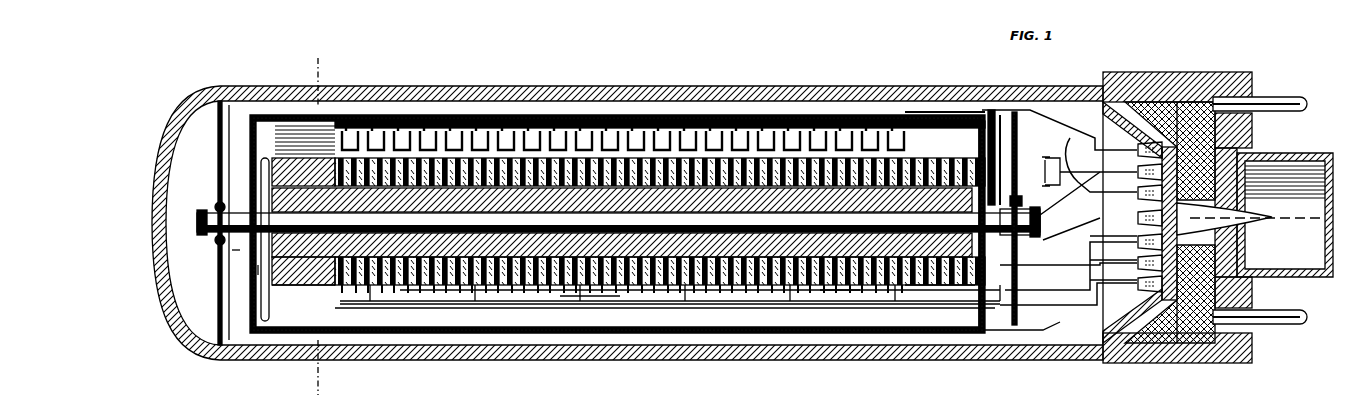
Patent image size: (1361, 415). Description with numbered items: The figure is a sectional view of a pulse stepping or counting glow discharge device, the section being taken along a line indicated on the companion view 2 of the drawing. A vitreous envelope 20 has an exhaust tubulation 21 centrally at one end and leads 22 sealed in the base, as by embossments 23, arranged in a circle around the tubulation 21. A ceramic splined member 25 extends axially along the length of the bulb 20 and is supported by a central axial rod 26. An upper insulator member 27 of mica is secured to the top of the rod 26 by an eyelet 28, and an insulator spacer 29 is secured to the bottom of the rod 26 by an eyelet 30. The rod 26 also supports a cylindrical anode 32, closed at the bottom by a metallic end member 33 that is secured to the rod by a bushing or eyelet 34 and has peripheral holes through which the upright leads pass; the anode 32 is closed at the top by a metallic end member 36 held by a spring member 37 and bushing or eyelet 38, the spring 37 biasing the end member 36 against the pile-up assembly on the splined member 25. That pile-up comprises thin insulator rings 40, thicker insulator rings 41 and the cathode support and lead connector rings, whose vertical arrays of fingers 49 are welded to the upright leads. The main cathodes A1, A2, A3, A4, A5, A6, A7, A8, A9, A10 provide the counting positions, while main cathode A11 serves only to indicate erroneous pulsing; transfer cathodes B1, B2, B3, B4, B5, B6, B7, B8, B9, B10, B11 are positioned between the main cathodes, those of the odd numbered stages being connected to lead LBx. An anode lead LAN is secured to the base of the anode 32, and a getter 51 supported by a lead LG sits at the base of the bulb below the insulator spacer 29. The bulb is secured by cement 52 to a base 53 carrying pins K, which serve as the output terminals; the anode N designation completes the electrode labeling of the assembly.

The vitreous envelope 20 is at (222, 95).
The cylindrical anode 32 is at (292, 118).
The section line 2- 2 is at (314, 64).
The splined member 25 is at (276, 198).
The central axial rod 26 is at (204, 213).
The metallic end member 36 is at (222, 347).
The eyelet 28 is at (215, 235).
The bushing or eyelet 38 is at (224, 243).
The upper insulator member 27 is at (236, 252).
The spring member 37 is at (259, 268).
The main cathode A11 is at (350, 128).
The transfer cathode B11 is at (376, 128).
The main cathode A10 is at (402, 128).
The transfer cathode B10 is at (428, 128).
The main cathode A9 is at (454, 128).
The transfer cathode B9 is at (480, 128).
The main cathode A8 is at (506, 128).
The transfer cathode B8 is at (532, 128).
The main cathode A7 is at (558, 128).
The transfer cathode B7 is at (584, 128).
The main cathode A6 is at (610, 128).
The transfer cathode B6 is at (636, 128).
The main cathode A5 is at (662, 128).
The transfer cathode B5 is at (688, 128).
The main cathode A4 is at (714, 128).
The transfer cathode B4 is at (740, 128).
The main cathode A3 is at (766, 128).
The transfer cathode B3 is at (792, 128).
The main cathode A2 is at (818, 128).
The transfer cathode B2 is at (844, 128).
The main cathode A1 is at (870, 128).
The transfer cathode B1 is at (896, 128).
The anode N is at (910, 112).
The lead LBx is at (362, 308).
The fingers 49 is at (592, 302).
The thin insulator rings 40 is at (842, 292).
The thicker insulator rings 41 is at (306, 288).
The metallic end member 33 is at (980, 112).
The bushing or eyelet 34 is at (992, 112).
The insulator spacer 29 is at (1015, 112).
The anode lead LAN is at (1050, 122).
The getter 51 is at (1047, 166).
The lead LG is at (1072, 142).
The eyelet 30 is at (1018, 196).
The embossments 23 is at (1140, 148).
The base 53 is at (1232, 72).
The cement 52 is at (1175, 100).
The leads 22 is at (1200, 112).
The exhaust tubulation 21 is at (1258, 226).
The pins K is at (1275, 97).